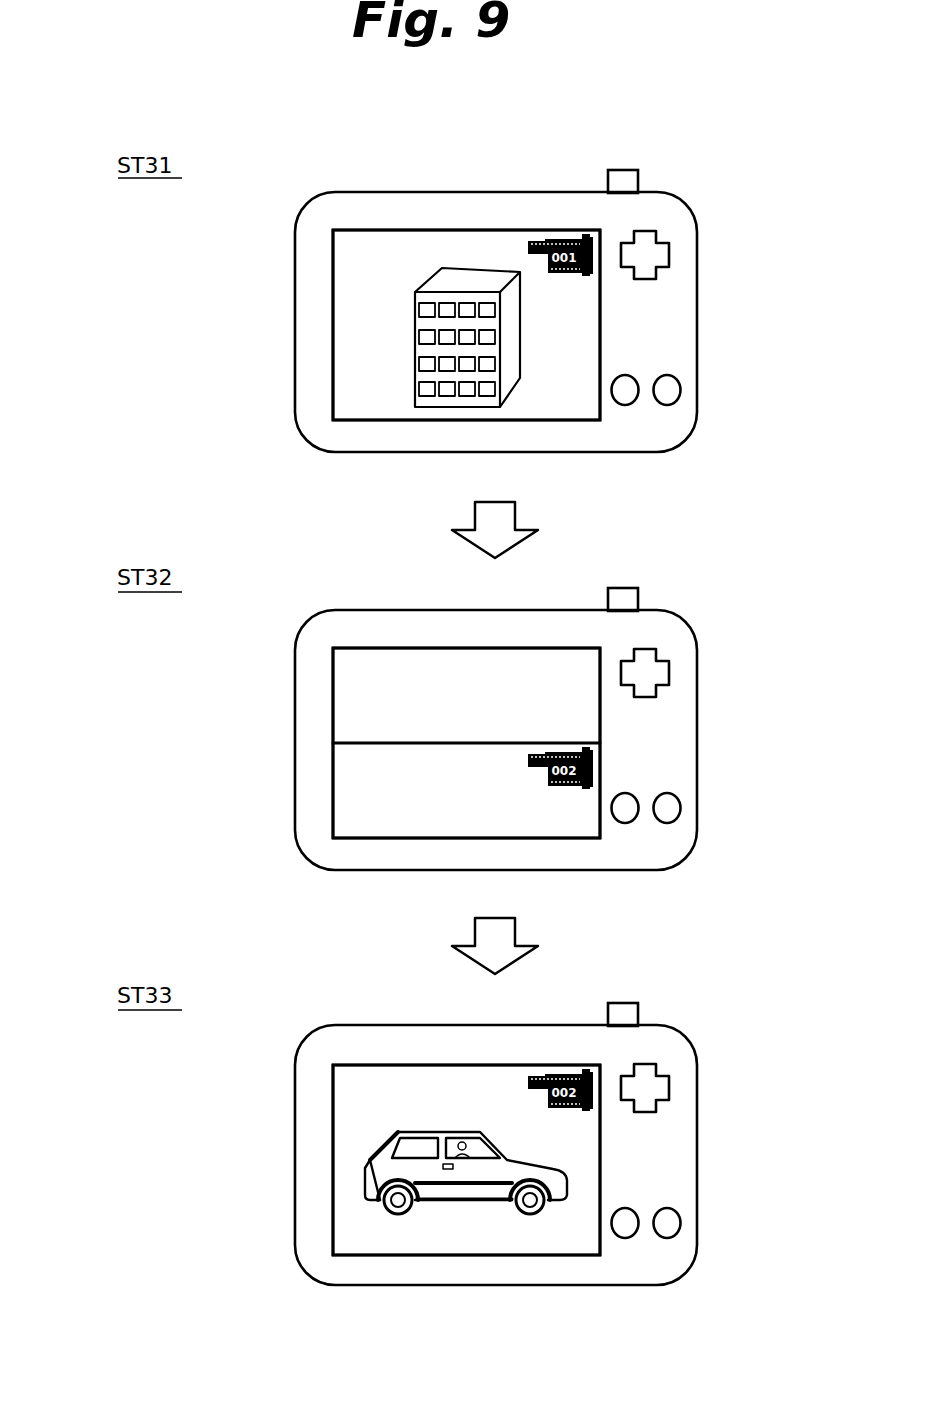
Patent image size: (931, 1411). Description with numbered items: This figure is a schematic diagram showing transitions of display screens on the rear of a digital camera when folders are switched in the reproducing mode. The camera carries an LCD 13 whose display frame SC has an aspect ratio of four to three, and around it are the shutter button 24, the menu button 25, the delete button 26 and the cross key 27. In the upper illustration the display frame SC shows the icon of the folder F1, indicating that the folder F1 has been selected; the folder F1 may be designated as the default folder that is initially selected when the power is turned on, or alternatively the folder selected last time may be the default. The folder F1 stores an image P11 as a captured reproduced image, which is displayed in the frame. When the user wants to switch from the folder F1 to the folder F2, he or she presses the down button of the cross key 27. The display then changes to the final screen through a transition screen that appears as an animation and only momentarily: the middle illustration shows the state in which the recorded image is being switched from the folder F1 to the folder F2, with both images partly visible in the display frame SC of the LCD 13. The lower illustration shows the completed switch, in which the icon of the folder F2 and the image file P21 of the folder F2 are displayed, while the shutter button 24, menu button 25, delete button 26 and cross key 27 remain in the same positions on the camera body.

The LCD 13 is at (378, 230).
The display frame SC is at (333, 252).
The folder F1 is at (333, 337).
The folder F2 is at (333, 797).
The image P11 is at (452, 243).
The image file P21 is at (432, 1080).
The shutter button 24 is at (625, 170).
The menu button 25 is at (628, 405).
The delete button 26 is at (672, 405).
The cross key 27 is at (662, 258).